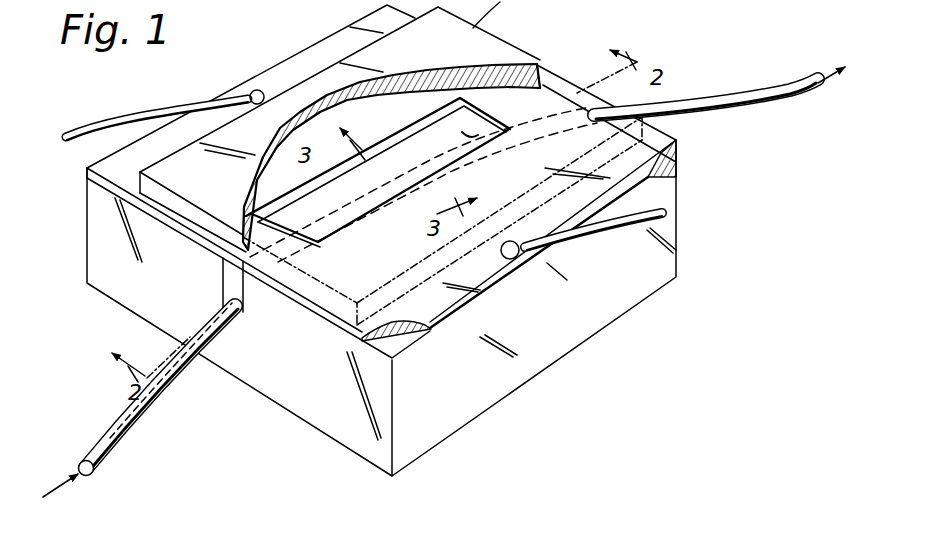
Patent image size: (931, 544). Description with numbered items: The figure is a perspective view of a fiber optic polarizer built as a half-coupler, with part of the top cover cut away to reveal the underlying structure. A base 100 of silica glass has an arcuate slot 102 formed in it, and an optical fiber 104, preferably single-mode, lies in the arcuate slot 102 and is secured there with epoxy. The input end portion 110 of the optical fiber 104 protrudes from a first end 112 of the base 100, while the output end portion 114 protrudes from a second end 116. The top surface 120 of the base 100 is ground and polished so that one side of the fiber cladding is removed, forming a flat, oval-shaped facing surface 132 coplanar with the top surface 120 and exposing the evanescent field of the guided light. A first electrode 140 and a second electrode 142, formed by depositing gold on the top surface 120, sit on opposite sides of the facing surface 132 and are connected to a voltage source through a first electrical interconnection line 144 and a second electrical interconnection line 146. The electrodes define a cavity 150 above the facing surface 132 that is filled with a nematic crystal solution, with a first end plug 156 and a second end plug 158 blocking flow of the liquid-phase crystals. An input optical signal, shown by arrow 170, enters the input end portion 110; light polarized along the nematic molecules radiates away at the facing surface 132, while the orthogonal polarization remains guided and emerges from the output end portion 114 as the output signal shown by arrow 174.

The base 100 is at (600, 332).
The arcuate slot 102 is at (227, 273).
The optical fiber 104 is at (140, 433).
The input end portion 110 is at (190, 372).
The first end 112 is at (333, 422).
The output end portion 114 is at (753, 108).
The second end 116 is at (676, 232).
The top surface 120 is at (400, 343).
The facing surface 132 is at (410, 158).
The first electrode 140 is at (668, 152).
The second electrode 142 is at (500, 52).
The first electrical interconnection line 144 is at (608, 237).
The second electrical interconnection line 146 is at (97, 118).
The cavity 150 is at (478, 135).
The first end plug 156 is at (248, 210).
The second end plug 158 is at (553, 90).
The arrow 170 is at (63, 487).
The arrow 174 is at (840, 77).